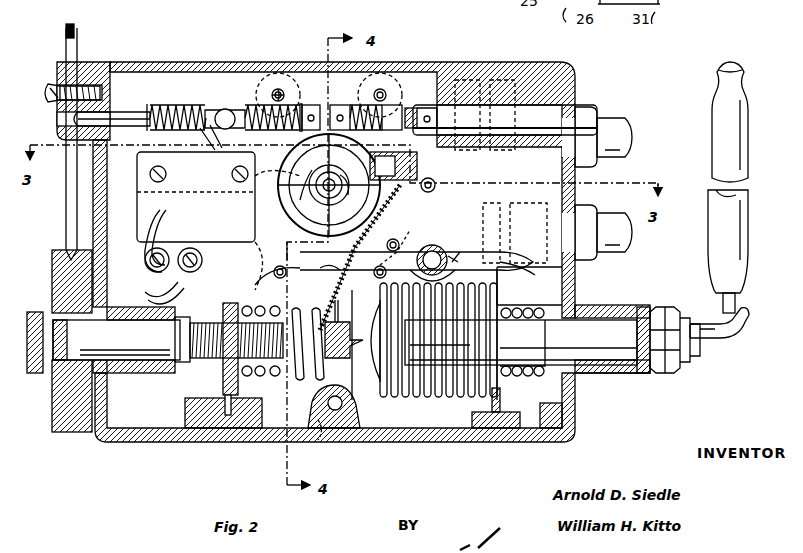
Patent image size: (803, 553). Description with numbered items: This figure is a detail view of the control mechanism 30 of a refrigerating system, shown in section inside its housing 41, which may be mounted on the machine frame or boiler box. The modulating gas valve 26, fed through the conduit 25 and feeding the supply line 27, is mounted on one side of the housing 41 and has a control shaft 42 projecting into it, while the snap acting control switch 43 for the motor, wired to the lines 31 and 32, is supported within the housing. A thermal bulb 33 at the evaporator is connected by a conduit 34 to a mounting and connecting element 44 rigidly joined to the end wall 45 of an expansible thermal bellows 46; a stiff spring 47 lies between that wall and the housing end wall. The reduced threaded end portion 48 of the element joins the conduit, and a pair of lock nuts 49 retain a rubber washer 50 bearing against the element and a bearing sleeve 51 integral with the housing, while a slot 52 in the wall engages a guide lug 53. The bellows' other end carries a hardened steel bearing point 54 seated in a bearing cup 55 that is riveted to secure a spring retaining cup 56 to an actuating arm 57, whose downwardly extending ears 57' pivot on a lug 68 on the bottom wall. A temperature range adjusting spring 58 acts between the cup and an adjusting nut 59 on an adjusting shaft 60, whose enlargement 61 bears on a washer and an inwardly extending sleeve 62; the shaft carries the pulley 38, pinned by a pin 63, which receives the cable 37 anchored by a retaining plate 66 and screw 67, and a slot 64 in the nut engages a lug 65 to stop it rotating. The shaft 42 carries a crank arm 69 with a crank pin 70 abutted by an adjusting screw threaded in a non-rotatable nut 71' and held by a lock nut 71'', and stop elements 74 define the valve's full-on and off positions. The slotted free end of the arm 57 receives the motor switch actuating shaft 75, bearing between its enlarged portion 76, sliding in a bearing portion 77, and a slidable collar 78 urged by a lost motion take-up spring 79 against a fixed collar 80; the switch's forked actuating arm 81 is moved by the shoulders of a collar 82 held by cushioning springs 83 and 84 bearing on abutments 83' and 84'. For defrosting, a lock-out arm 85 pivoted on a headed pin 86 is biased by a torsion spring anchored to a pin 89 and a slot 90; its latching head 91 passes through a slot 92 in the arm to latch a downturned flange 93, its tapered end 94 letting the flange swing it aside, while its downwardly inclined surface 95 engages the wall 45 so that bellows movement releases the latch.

The conduit 25 is at (610, 120).
The modulating valve 26 is at (262, 290).
The supply line 27 is at (605, 218).
The control mechanism 30 is at (122, 442).
The supply line 31 is at (146, 292).
The line 32 is at (155, 215).
The thermal bulb 33 is at (730, 148).
The conduit 34 is at (738, 336).
The cable mechanism 37 is at (64, 42).
The pulley 38 is at (52, 396).
The housing 41 is at (440, 65).
The control shaft 42 is at (327, 200).
The snap acting control switch 43 is at (196, 196).
The mounting and connecting element 44 is at (521, 342).
The end wall 45 is at (510, 377).
The expansible thermal bellows 46 is at (432, 384).
The stiff spring 47 is at (540, 378).
The reduced threaded end portion 48 is at (683, 364).
The lock nuts 49 is at (660, 307).
The rubber washer 50 is at (644, 306).
The bearing sleeve 51 is at (622, 374).
The slot 52 is at (496, 429).
The guide lug 53 is at (482, 429).
The hardened steel bearing point 54 is at (365, 382).
The bearing cup 55 is at (332, 358).
The spring retaining cup 56 is at (300, 372).
The actuating arm 57 is at (352, 345).
The downwardly extending ears 57' is at (308, 441).
The temperature range adjusting spring 58 is at (258, 376).
The adjusting nut 59 is at (223, 378).
The adjusting shaft 60 is at (116, 340).
The enlargement 61 is at (184, 364).
The inwardly extending sleeve 62 is at (148, 373).
The pin 63 is at (44, 313).
The slot 64 is at (228, 430).
The lug 65 is at (200, 430).
The retaining plate 66 is at (57, 72).
The screw 67 is at (45, 92).
The lug 68 is at (340, 412).
The crank arm 69 is at (318, 198).
The crank pin 70 is at (305, 150).
The non-rotatable nut 71' is at (428, 134).
The lock nut 71'' is at (441, 187).
The stop elements 74 is at (372, 160).
The motor switch actuating shaft 75 is at (118, 114).
The enlarged portion 76 is at (470, 136).
The bearing portion 77 is at (502, 103).
The slidable collar 78 is at (392, 103).
The lost motion take-up spring 79 is at (342, 103).
The collar 80 is at (316, 103).
The forked actuating arm 81 is at (212, 140).
The collar 82 is at (232, 108).
The cushioning spring 83 is at (178, 84).
The abutment 83' is at (159, 103).
The cushioning spring 84 is at (270, 104).
The abutment 84' is at (282, 86).
The lock-out arm 85 is at (530, 274).
The headed pin 86 is at (432, 245).
The pin 89 is at (412, 230).
The slot 90 is at (455, 252).
The latching head 91 is at (332, 272).
The slot 92 is at (330, 285).
The downturned flange 93 is at (352, 200).
The tapered end 94 is at (330, 256).
The downwardly inclined surface 95 is at (503, 282).